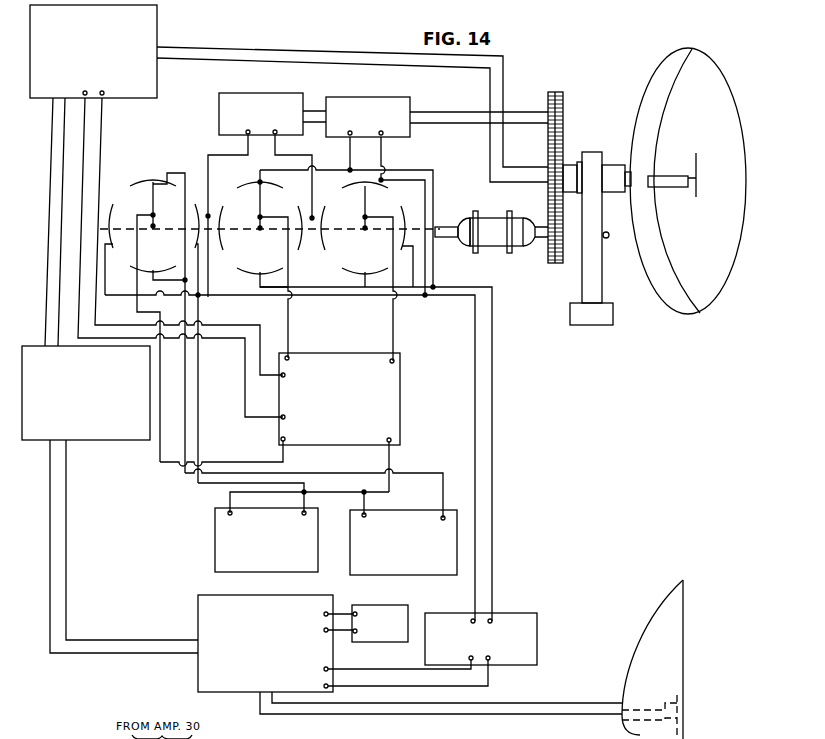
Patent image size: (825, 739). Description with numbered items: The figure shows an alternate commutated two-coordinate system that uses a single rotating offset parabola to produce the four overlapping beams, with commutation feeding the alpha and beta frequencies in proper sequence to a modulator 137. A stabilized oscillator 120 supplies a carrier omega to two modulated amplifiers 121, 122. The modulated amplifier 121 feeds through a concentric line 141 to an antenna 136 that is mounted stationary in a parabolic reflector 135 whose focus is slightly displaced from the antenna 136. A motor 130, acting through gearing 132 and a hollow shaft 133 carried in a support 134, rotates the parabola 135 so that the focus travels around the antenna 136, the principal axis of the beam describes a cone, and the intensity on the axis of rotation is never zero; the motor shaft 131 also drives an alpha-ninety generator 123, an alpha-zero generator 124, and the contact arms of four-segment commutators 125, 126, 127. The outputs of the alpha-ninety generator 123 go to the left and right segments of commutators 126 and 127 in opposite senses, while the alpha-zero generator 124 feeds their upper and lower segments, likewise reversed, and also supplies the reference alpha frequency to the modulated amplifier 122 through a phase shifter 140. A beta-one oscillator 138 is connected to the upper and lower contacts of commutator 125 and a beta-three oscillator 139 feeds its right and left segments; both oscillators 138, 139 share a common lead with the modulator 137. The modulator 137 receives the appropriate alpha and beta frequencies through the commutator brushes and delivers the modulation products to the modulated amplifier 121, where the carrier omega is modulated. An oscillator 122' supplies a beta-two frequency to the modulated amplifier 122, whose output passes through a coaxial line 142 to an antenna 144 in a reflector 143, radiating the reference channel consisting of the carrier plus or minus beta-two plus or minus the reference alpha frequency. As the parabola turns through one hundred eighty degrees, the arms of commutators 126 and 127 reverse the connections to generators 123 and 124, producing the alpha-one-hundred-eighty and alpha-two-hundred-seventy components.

The stabilized oscillator 120 is at (45, 440).
The modulated amplifier 121 is at (147, 98).
The modulated amplifier 122 is at (282, 643).
The oscillator 122' is at (371, 614).
The α90 generator 123 is at (219, 130).
The α0 generator 124 is at (410, 134).
The four-segment commutator 125 is at (153, 210).
The four-segment commutator 126 is at (260, 210).
The four-segment commutator 127 is at (365, 210).
The motor 130 is at (488, 252).
The motor shaft 131 is at (448, 225).
The gearing 132 is at (548, 205).
The hollow shaft 133 is at (567, 165).
The support bearing 134 is at (602, 270).
The parabolic reflector 135 is at (745, 214).
The antenna 136 is at (697, 197).
The modulator 137 is at (395, 445).
The β1 oscillator 138 is at (215, 571).
The β3 oscillator 139 is at (352, 576).
The phase shifter 140 is at (537, 658).
The concentric line 141 is at (357, 53).
The coaxial line 142 is at (535, 720).
The reflector 143 is at (683, 598).
The antenna 144 is at (678, 706).